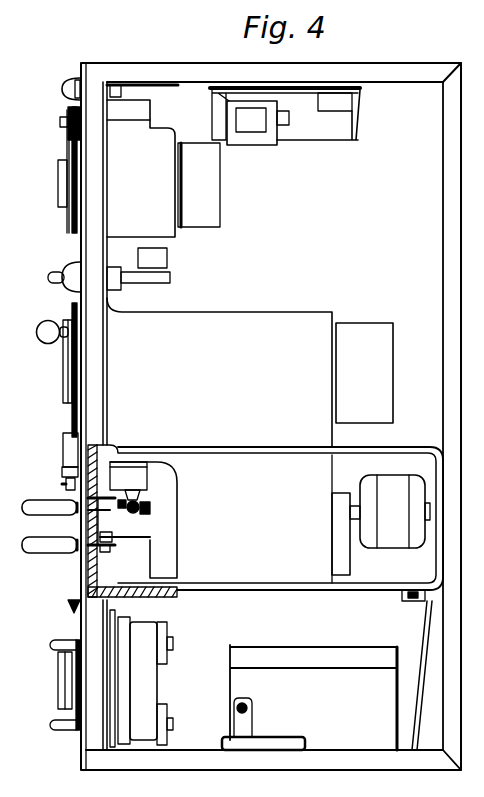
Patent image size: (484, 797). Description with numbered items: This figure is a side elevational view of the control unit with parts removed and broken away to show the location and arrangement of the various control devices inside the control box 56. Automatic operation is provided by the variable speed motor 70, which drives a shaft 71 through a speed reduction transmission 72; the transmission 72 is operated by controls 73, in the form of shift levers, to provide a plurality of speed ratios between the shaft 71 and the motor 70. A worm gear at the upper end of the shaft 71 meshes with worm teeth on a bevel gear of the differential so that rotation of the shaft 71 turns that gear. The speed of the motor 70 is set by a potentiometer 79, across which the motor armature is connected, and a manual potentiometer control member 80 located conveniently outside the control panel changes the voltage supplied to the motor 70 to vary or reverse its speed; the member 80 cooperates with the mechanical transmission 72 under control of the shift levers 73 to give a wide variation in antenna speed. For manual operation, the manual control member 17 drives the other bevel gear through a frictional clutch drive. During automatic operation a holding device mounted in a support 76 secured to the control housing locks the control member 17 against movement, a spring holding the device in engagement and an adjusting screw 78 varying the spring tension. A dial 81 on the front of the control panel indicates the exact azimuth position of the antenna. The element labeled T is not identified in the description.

The dial 81 is at (75, 222).
The manual control member 17 is at (72, 376).
The support 76 is at (66, 461).
The adjusting screw 78 is at (64, 486).
The controls (shift levers) 73 is at (45, 540).
The control box 56 is at (274, 322).
The transformer T is at (366, 335).
The speed reduction transmission 72 is at (160, 556).
The shaft 71 is at (146, 493).
The variable speed motor 70 is at (386, 486).
The potentiometer 79 is at (145, 680).
The manual potentiometer control member 80 is at (60, 683).